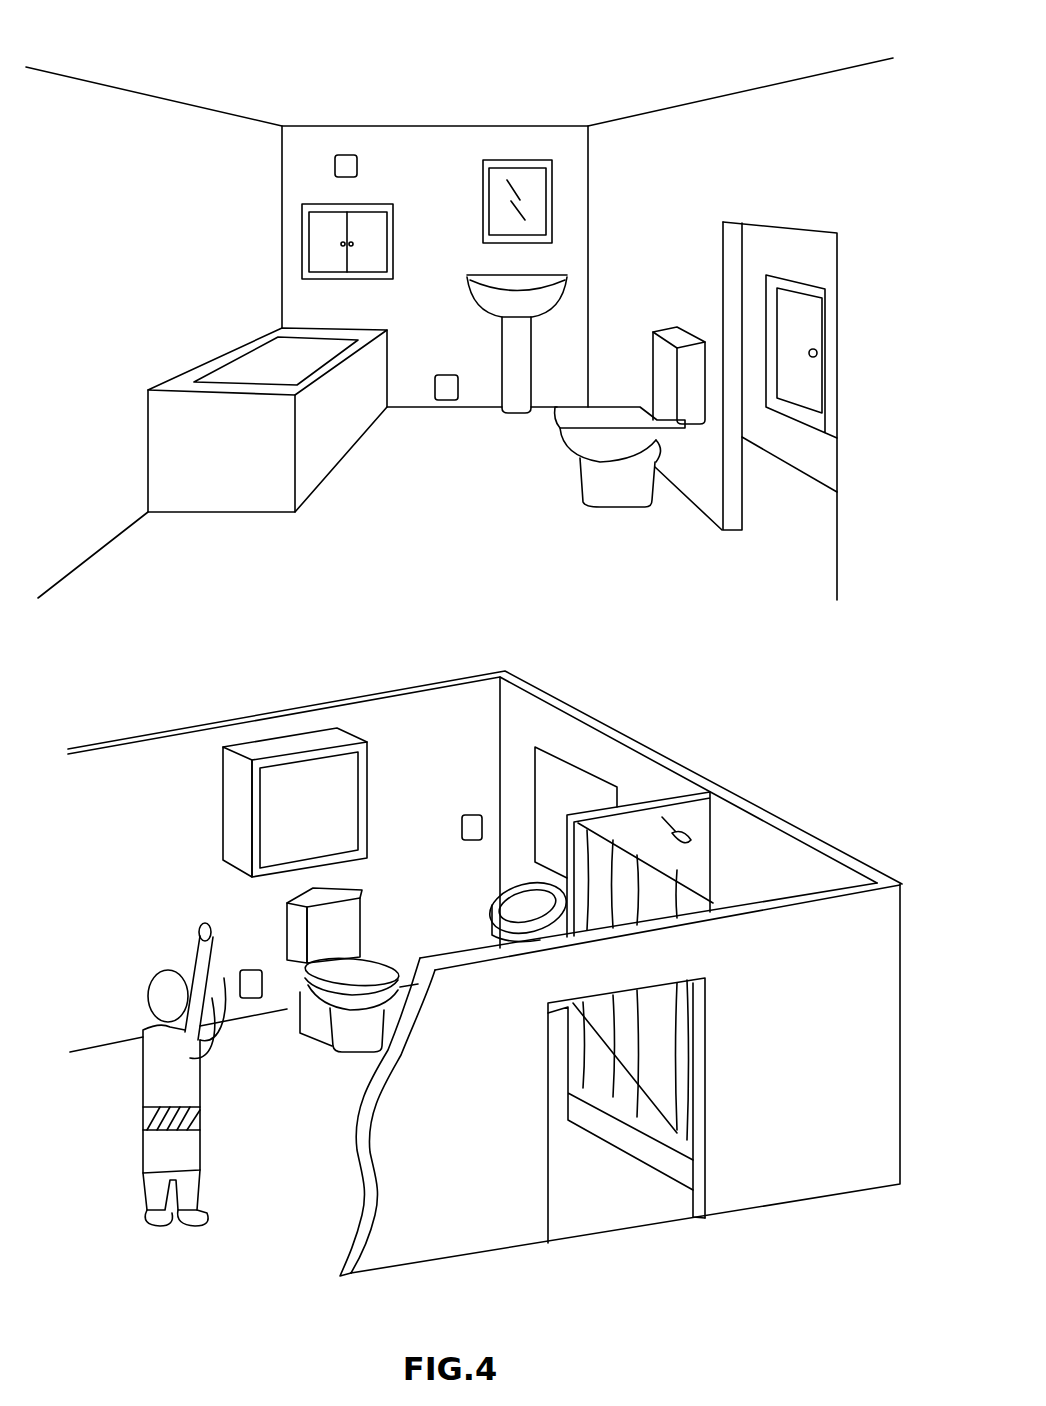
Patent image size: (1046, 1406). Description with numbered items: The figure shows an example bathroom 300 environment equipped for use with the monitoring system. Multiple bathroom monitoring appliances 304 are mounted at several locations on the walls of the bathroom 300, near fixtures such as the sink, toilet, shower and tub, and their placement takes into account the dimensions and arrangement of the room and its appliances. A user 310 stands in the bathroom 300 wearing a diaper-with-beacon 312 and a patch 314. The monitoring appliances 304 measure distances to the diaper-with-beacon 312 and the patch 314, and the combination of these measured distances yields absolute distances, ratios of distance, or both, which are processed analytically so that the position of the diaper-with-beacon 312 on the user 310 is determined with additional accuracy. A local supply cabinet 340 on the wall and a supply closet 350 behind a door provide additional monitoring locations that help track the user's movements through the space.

The bathroom 300 is at (612, 66).
The bathroom monitoring appliance 304 is at (348, 155).
The user 310 is at (157, 1063).
The diaper-with-beacon 312 is at (140, 1104).
The patch 314 is at (153, 1193).
The local supply cabinet 340 is at (317, 247).
The supply closet 350 is at (809, 327).